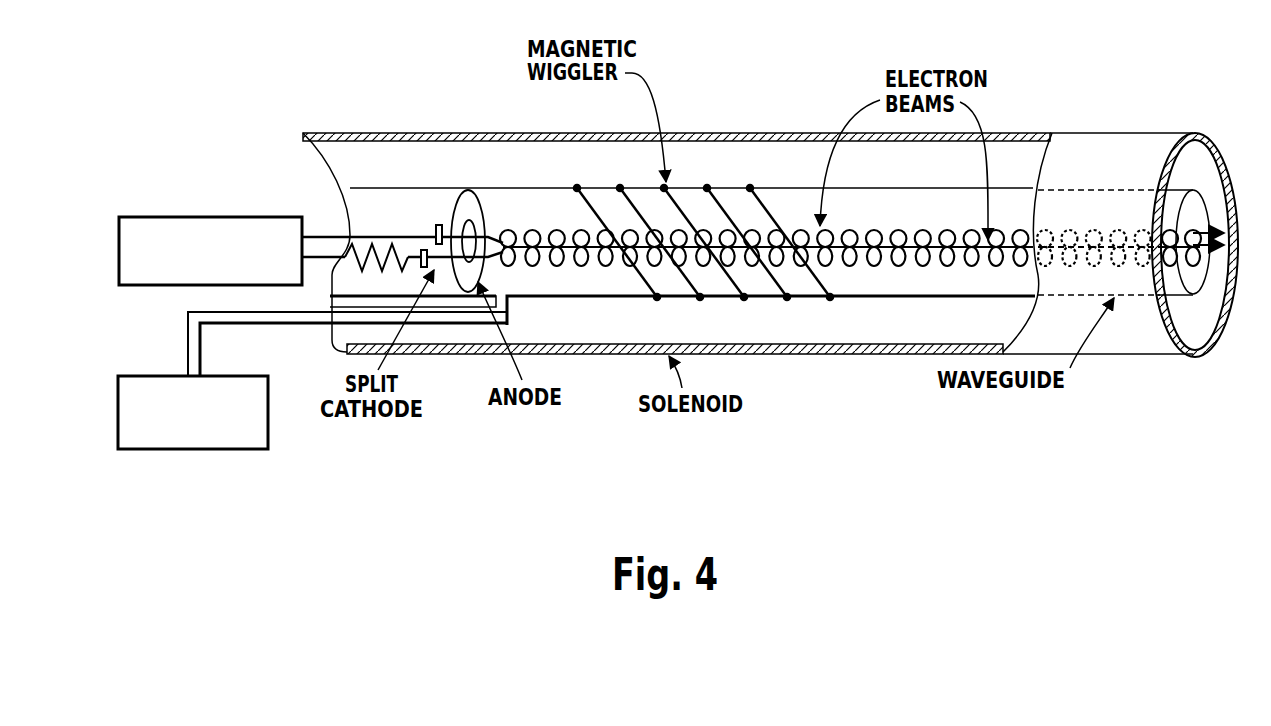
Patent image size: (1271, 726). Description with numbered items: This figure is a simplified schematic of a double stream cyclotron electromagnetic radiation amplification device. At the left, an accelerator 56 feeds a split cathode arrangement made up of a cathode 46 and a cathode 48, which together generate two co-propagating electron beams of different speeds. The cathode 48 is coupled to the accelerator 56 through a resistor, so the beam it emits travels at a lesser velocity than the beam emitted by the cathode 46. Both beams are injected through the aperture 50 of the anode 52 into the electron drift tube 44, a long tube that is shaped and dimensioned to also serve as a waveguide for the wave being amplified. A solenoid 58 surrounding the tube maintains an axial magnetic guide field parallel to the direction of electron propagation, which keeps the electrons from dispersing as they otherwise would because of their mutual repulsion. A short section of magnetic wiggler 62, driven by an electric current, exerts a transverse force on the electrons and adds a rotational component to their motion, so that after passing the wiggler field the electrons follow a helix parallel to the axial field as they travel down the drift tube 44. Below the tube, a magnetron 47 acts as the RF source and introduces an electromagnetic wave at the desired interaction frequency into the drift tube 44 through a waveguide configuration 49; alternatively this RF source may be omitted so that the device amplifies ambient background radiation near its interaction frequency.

The electron drift tube 44 is at (1118, 190).
The cathode 46 is at (437, 225).
The magnetron 47 is at (143, 376).
The cathode 48 is at (424, 267).
The waveguide configuration 49 is at (263, 325).
The aperture 50 is at (476, 192).
The anode 52 is at (455, 217).
The accelerator 56 is at (140, 217).
The solenoid 58 is at (740, 133).
The magnetic wiggler 62 is at (752, 296).